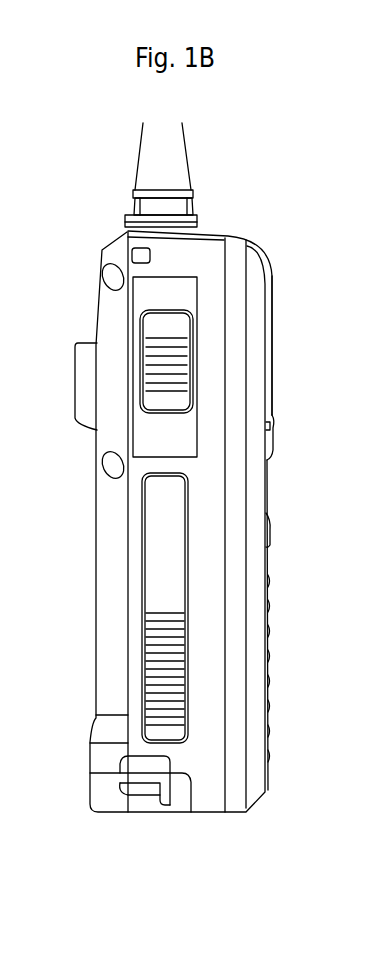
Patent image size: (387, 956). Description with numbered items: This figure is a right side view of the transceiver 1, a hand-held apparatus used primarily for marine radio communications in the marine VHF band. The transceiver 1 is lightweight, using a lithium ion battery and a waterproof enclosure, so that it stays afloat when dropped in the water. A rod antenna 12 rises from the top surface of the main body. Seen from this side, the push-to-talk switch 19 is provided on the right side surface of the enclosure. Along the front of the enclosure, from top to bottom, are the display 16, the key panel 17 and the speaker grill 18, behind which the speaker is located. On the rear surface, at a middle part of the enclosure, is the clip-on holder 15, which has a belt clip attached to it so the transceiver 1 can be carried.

The transceiver 1 is at (278, 215).
The rod antenna 12 is at (177, 153).
The clip-on holder 15 is at (80, 422).
The display 16 is at (268, 343).
The key panel 17 is at (277, 480).
The speaker grill 18 is at (266, 658).
The push-to-talk switch 19 is at (148, 348).